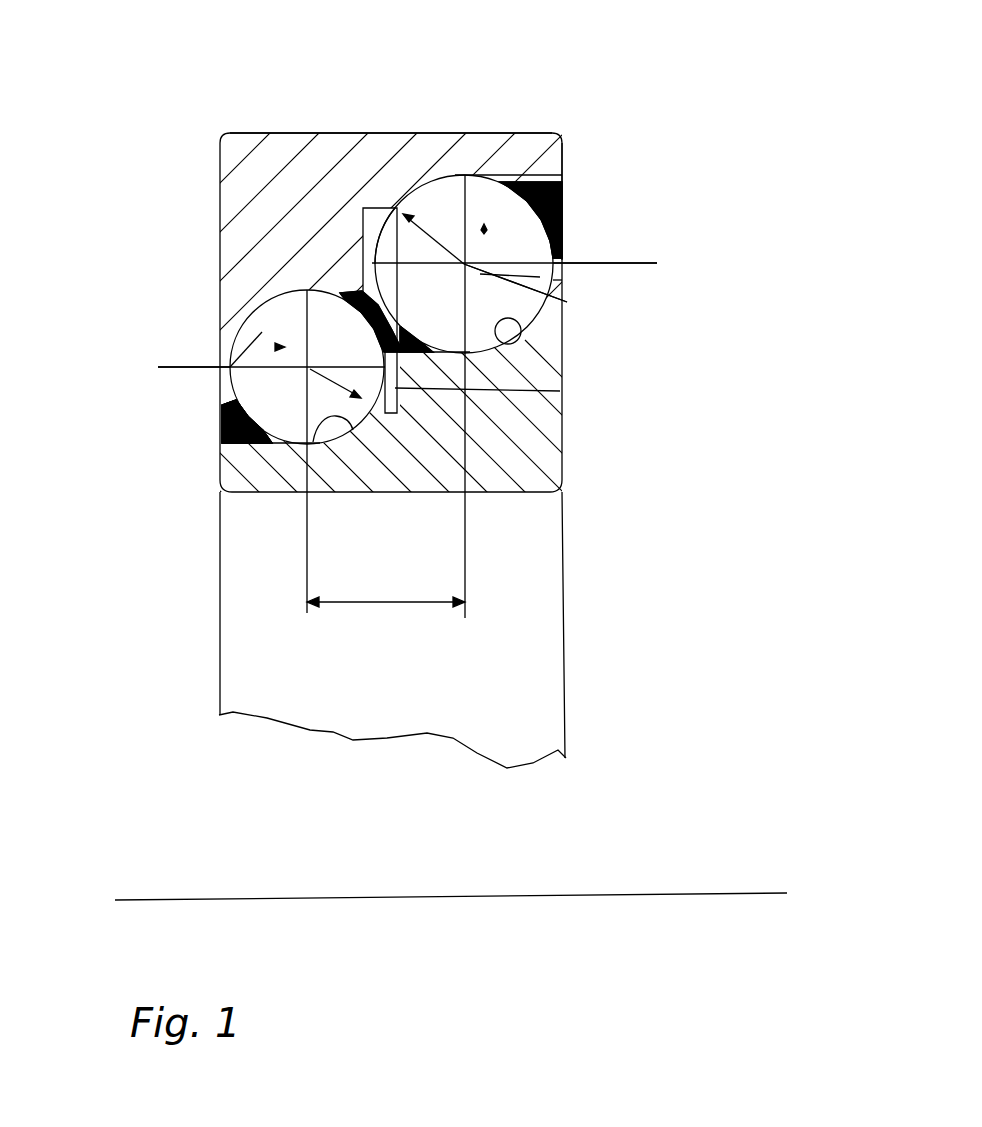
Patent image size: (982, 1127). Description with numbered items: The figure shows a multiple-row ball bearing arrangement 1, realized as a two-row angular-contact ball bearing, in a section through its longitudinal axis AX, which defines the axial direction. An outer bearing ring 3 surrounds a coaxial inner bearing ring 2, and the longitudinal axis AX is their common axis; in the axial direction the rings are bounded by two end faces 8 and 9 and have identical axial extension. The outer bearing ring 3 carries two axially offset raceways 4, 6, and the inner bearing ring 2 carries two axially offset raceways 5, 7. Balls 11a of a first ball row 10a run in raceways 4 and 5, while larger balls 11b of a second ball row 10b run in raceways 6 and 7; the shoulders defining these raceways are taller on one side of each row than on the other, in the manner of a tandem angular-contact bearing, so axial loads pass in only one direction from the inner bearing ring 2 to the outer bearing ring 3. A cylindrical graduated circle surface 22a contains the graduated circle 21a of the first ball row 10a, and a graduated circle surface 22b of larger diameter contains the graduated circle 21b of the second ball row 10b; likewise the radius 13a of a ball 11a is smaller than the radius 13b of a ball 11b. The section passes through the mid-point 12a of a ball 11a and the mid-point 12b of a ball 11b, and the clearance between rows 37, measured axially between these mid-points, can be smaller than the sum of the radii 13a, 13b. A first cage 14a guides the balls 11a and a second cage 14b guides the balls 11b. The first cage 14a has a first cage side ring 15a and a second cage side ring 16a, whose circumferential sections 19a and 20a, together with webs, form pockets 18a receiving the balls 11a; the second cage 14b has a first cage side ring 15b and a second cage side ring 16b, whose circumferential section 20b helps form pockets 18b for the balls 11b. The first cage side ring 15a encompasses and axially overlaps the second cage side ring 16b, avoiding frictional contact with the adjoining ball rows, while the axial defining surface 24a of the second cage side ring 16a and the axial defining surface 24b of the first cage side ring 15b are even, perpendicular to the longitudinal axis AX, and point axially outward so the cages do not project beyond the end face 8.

The multiple-row ball bearing arrangement 1 is at (626, 103).
The inner bearing ring 2 is at (510, 412).
The outer bearing ring 3 is at (268, 206).
The raceway 4 is at (282, 305).
The raceway 5 is at (308, 447).
The raceway 6 is at (422, 195).
The raceway 7 is at (521, 336).
The end face 8 is at (219, 161).
The end face 9 is at (563, 155).
The first ball row 10a is at (382, 342).
The second ball row 10b is at (573, 297).
The ball 11a is at (262, 332).
The ball 11b is at (540, 277).
The mid-point 12a is at (240, 395).
The mid-point 12b is at (567, 302).
The radius 13a is at (560, 391).
The radius 13b is at (562, 190).
The first cage 14a is at (222, 440).
The second cage 14b is at (562, 187).
The first cage side ring 15a is at (310, 284).
The first cage side ring 15b is at (562, 190).
The second cage side ring 16a is at (218, 446).
The second cage side ring 16b is at (372, 340).
The pocket 18a is at (285, 347).
The pocket 18b is at (481, 230).
The circumferential section 19a is at (310, 284).
The circumferential section 20a is at (218, 446).
The circumferential section 20b is at (372, 340).
The graduated circle 21a is at (240, 395).
The graduated circle 21b is at (567, 302).
The graduated circle surface 22a is at (181, 363).
The graduated circle surface 22b is at (627, 260).
The axial defining surface 24a is at (222, 430).
The axial defining surface 24b is at (563, 205).
The clearance between rows 37 is at (392, 602).
The longitudinal axis AX is at (580, 893).